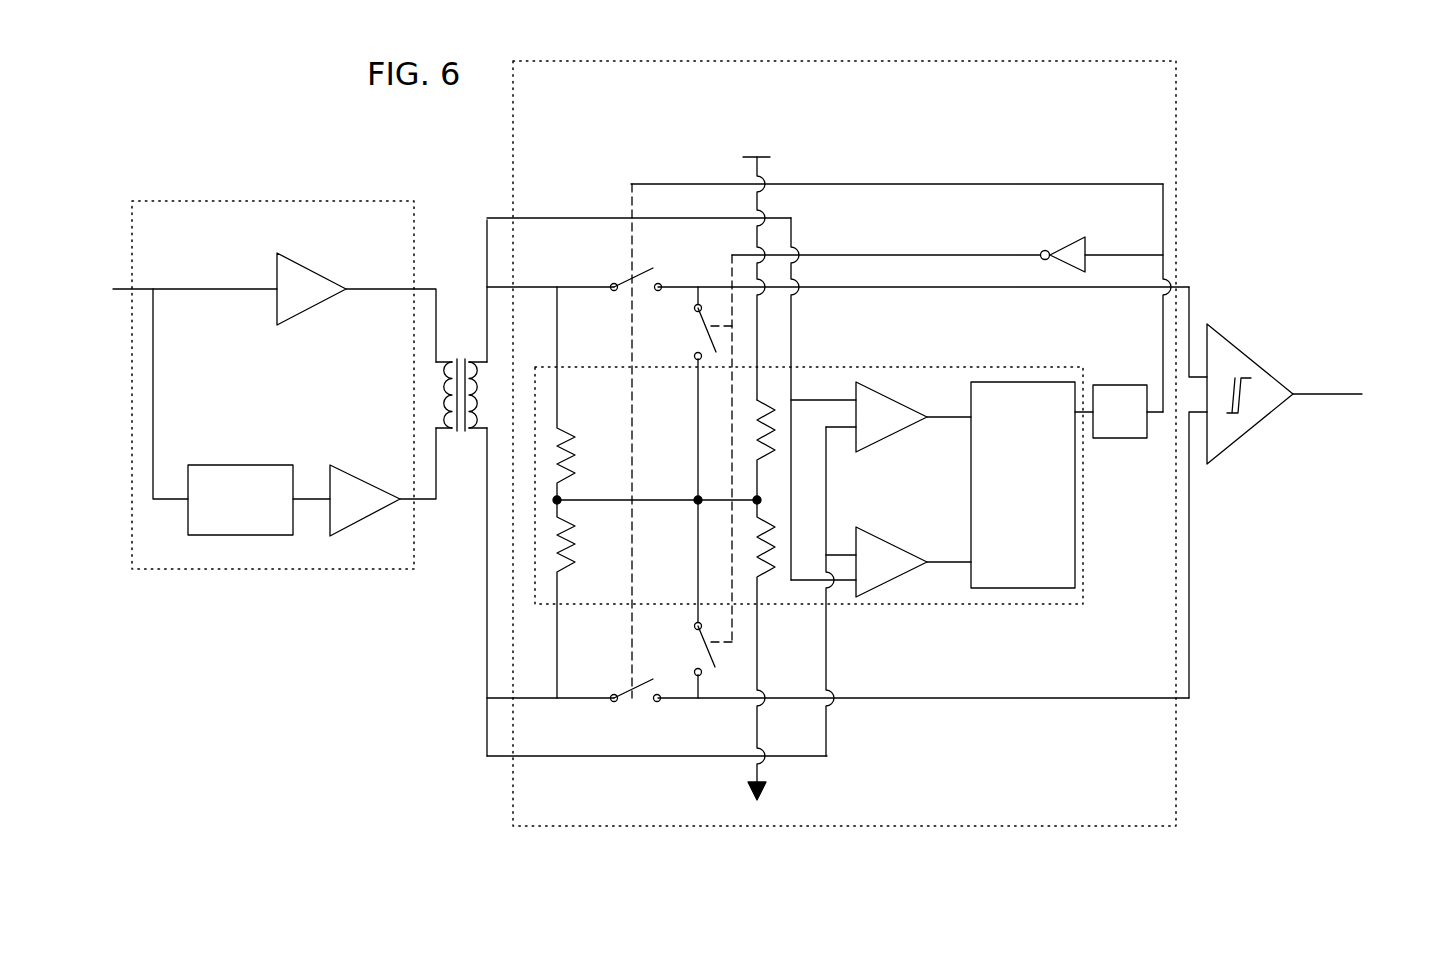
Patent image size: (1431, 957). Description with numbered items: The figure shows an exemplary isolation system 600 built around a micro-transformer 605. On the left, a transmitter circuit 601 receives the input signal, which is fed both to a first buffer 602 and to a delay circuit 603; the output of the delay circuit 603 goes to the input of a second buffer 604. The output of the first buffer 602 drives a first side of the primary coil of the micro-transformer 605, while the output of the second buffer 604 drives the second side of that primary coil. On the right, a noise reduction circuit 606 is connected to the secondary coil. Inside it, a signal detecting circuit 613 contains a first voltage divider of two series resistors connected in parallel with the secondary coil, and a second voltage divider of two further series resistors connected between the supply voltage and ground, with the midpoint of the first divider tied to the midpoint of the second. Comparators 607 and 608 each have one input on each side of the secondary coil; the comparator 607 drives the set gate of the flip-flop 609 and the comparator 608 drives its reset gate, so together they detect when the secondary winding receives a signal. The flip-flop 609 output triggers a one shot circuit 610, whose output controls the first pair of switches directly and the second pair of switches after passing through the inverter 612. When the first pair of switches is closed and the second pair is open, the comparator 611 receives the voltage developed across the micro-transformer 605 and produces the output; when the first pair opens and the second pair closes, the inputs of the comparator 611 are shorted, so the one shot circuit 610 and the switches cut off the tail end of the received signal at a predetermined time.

The isolation system 600 is at (207, 167).
The transmitter circuit 601 is at (186, 270).
The first buffer 602 is at (303, 258).
The delay circuit 603 is at (220, 465).
The second buffer 604 is at (350, 475).
The micro-transformer 605 is at (460, 437).
The noise reduction circuit 606 is at (565, 131).
The comparator 607 is at (893, 396).
The comparator 608 is at (897, 543).
The flip-flop 609 is at (1010, 588).
The one shot circuit 610 is at (1105, 438).
The comparator 611 is at (1233, 342).
The inverter 612 is at (1070, 242).
The signal detecting circuit 613 is at (617, 403).